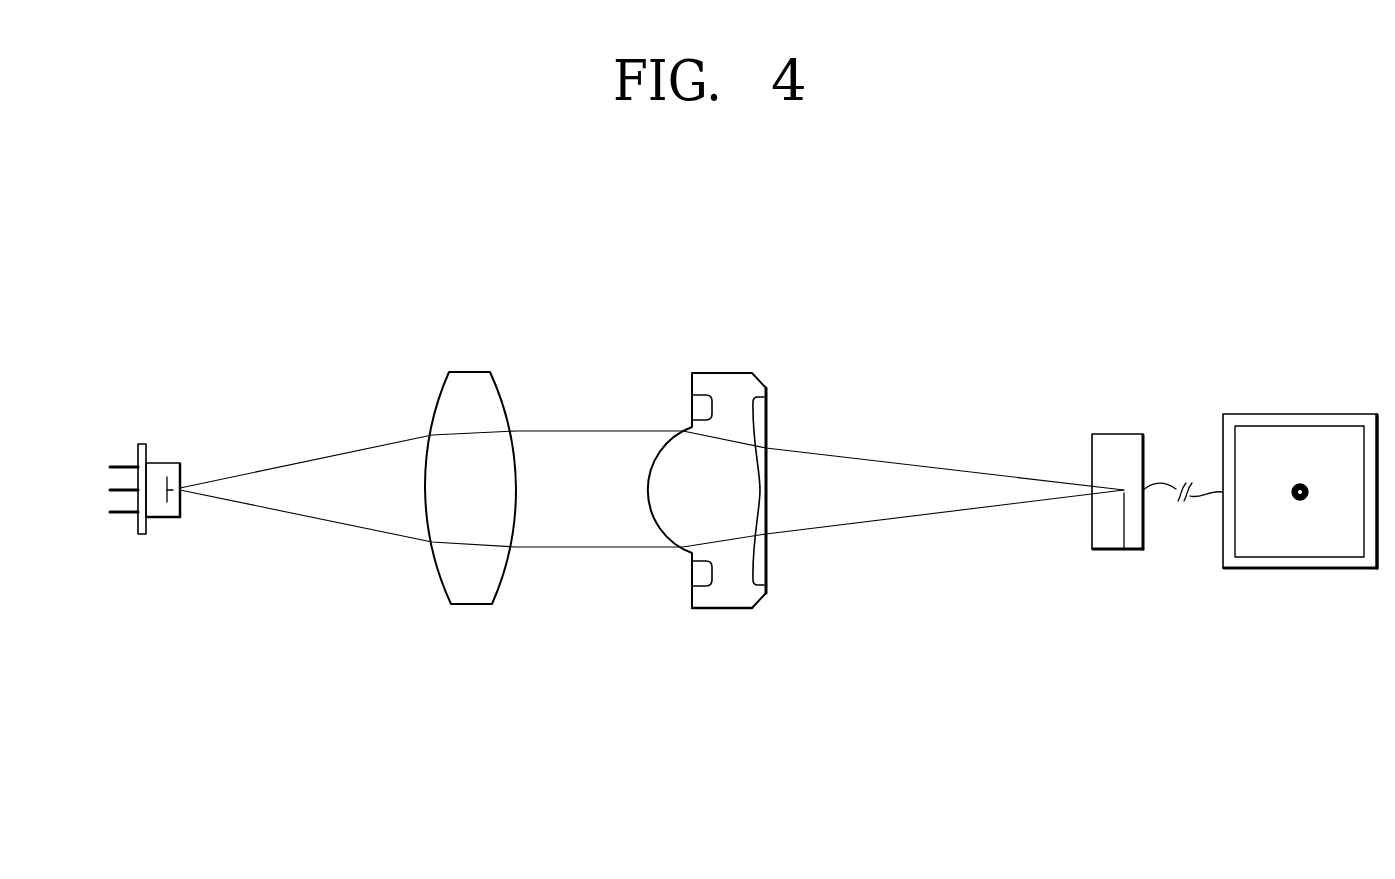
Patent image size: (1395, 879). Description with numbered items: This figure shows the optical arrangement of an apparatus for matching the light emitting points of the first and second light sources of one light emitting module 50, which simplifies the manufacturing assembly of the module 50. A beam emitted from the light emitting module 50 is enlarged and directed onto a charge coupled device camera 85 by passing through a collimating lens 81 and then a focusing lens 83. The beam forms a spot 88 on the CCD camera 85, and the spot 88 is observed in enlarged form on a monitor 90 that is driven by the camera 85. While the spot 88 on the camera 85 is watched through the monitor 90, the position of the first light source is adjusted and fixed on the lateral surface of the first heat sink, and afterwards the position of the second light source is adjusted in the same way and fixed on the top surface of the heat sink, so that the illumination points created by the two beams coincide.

The light emitting module 50 is at (158, 548).
The collimating lens 81 is at (477, 372).
The focusing lens 83 is at (725, 373).
The CCD camera 85 is at (1118, 434).
The spot 88 is at (1124, 549).
The monitor 90 is at (1297, 398).